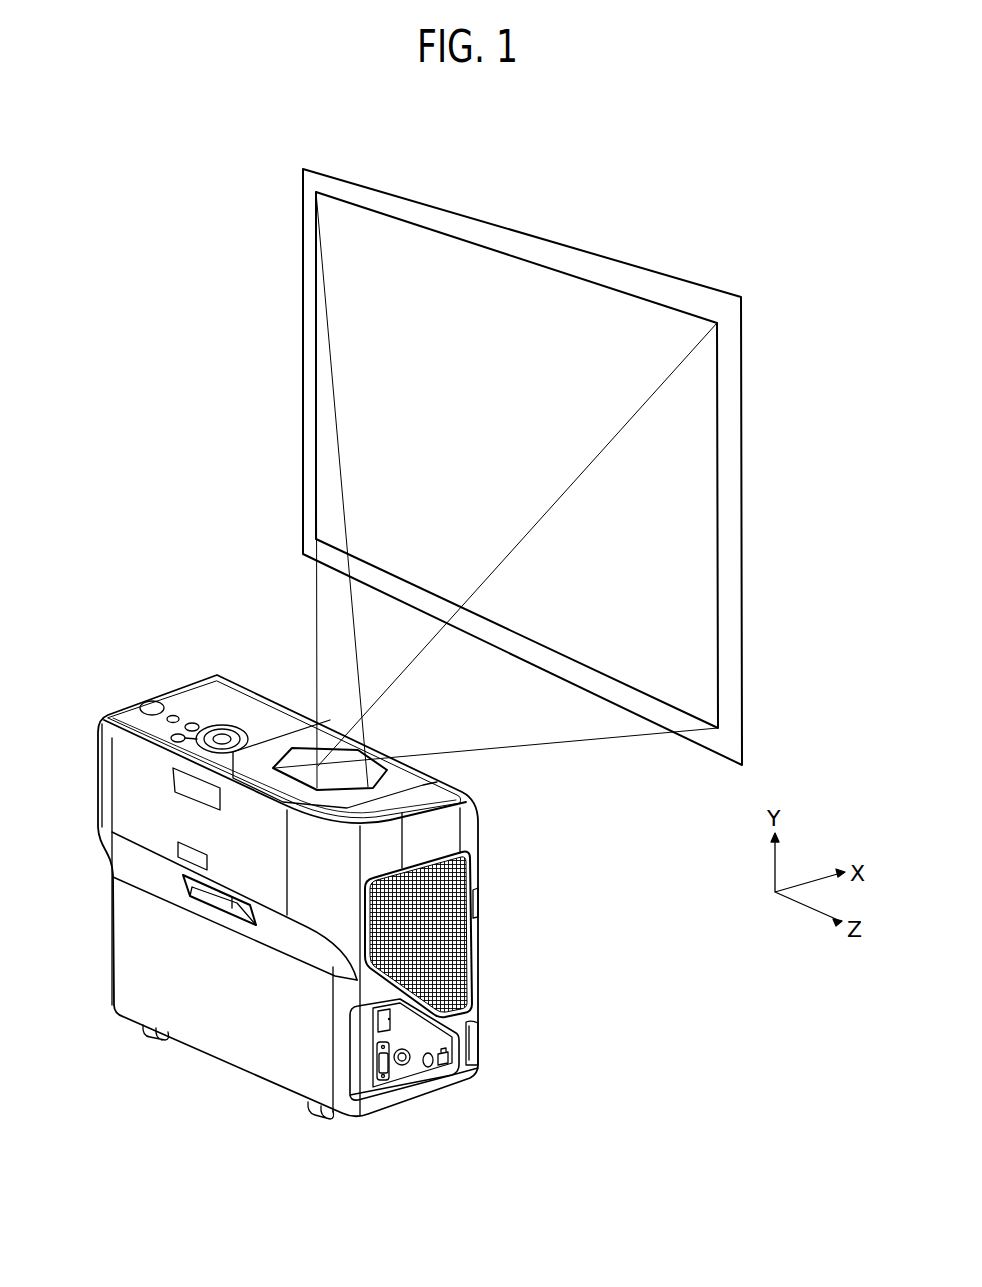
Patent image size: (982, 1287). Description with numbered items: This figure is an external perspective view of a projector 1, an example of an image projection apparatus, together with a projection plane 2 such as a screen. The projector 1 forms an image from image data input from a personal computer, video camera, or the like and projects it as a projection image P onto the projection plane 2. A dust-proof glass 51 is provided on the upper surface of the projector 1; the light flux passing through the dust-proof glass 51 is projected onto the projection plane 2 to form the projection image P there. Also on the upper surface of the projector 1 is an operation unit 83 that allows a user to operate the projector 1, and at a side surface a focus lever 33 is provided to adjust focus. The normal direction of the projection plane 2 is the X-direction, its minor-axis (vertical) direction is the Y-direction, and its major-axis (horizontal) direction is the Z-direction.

The projector 1 is at (100, 920).
The projection plane 2 is at (739, 404).
The projection image P is at (700, 535).
The focus lever 33 is at (230, 907).
The dust-proof glass 51 is at (380, 762).
The operation unit 83 is at (192, 698).